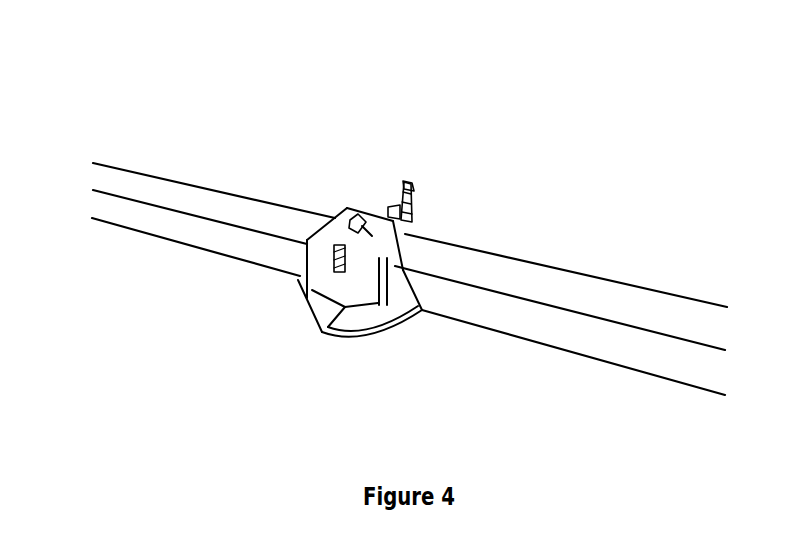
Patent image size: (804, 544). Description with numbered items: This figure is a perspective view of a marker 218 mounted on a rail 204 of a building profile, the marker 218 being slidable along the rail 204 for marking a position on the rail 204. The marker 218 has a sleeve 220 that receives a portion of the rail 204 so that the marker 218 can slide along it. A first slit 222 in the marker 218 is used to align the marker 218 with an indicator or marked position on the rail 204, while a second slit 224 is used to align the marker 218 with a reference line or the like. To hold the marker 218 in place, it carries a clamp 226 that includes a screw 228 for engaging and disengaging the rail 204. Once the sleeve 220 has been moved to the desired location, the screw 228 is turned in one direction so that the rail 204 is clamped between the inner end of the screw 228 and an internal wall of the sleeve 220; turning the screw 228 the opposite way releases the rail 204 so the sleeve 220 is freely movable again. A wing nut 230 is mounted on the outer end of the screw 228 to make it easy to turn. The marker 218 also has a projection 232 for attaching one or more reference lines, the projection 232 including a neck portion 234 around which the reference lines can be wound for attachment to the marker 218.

The rail 204 is at (597, 288).
The marker 218 is at (305, 112).
The sleeve 220 is at (327, 277).
The first slit 222 is at (333, 260).
The second slit 224 is at (323, 328).
The clamp 226 is at (421, 164).
The screw 228 is at (400, 217).
The wing nut 230 is at (412, 192).
The projection 232 is at (356, 215).
The neck portion 234 is at (360, 232).